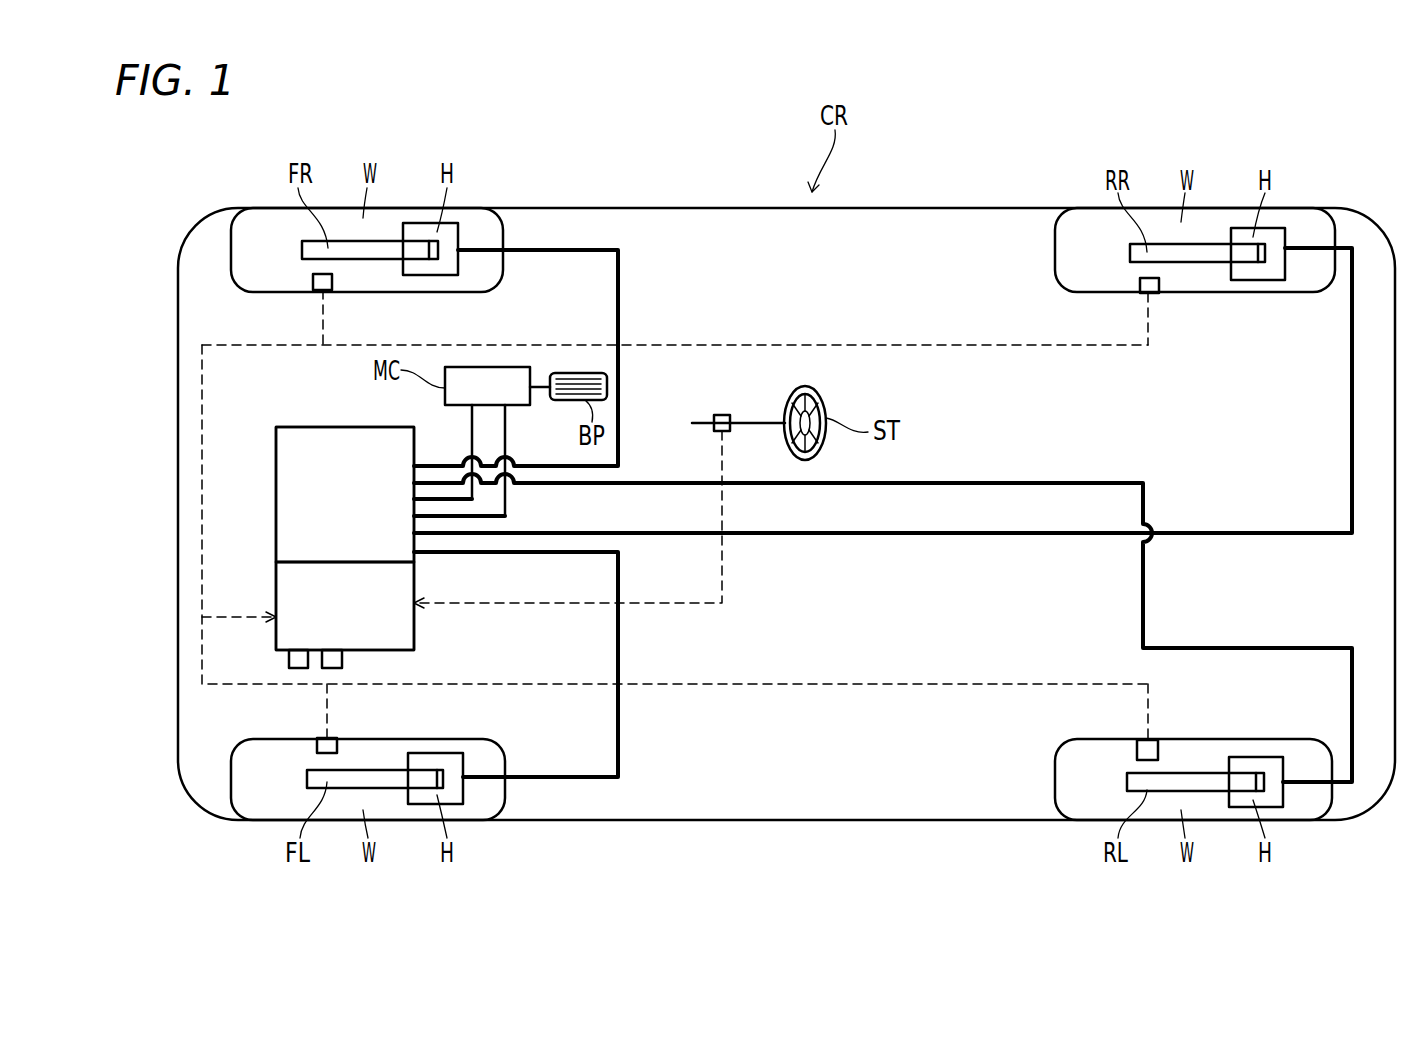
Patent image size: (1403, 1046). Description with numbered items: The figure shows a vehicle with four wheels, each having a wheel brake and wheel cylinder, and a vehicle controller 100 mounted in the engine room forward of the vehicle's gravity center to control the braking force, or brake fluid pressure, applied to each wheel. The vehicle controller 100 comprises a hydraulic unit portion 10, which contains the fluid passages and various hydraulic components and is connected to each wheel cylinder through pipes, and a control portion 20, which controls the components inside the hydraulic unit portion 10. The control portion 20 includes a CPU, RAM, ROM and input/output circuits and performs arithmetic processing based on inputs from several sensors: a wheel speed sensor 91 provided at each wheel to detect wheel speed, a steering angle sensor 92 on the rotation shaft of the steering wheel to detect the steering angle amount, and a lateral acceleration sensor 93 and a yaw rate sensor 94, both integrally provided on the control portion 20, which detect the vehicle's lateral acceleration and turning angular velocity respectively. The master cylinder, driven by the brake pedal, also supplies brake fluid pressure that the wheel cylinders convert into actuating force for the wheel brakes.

The hydraulic unit portion 10 is at (283, 452).
The control portion 20 is at (320, 606).
The wheel speed sensor 91 is at (333, 282).
The steering angle sensor 92 is at (722, 415).
The lateral acceleration sensor 93 is at (297, 668).
The yaw rate sensor 94 is at (333, 668).
The vehicle controller 100 is at (259, 538).